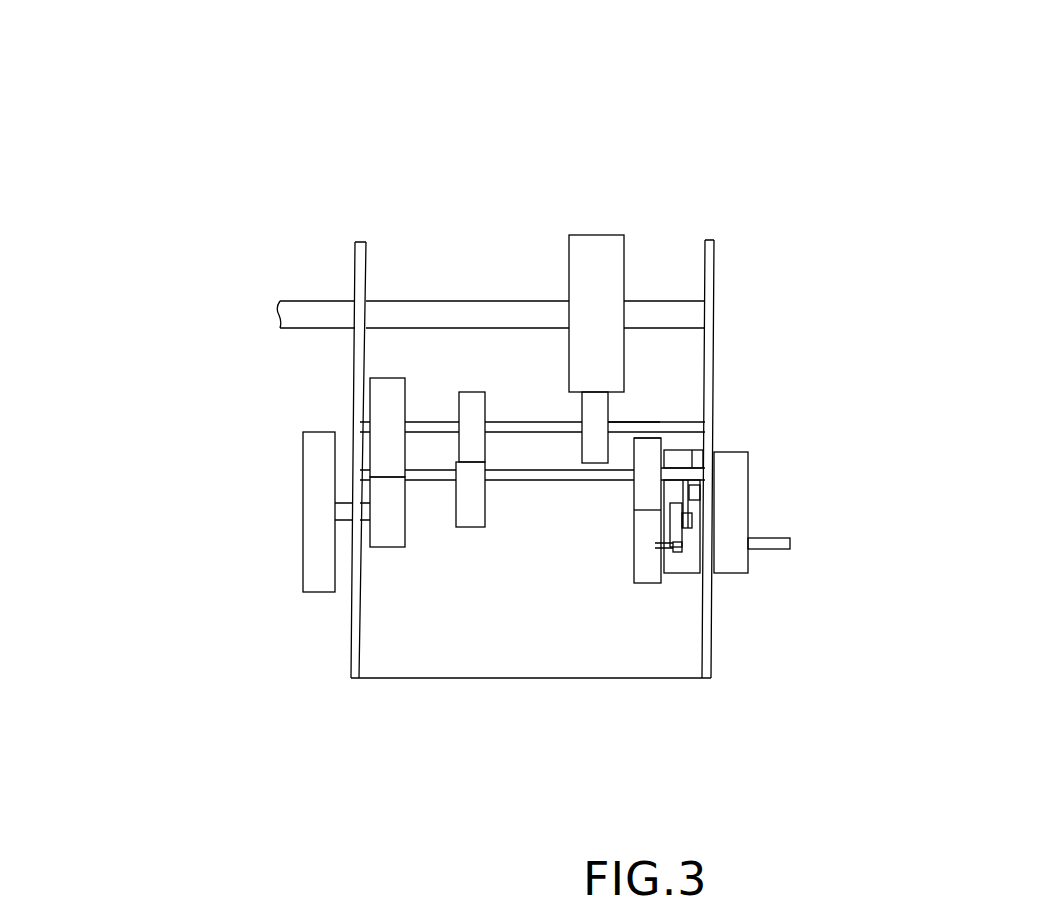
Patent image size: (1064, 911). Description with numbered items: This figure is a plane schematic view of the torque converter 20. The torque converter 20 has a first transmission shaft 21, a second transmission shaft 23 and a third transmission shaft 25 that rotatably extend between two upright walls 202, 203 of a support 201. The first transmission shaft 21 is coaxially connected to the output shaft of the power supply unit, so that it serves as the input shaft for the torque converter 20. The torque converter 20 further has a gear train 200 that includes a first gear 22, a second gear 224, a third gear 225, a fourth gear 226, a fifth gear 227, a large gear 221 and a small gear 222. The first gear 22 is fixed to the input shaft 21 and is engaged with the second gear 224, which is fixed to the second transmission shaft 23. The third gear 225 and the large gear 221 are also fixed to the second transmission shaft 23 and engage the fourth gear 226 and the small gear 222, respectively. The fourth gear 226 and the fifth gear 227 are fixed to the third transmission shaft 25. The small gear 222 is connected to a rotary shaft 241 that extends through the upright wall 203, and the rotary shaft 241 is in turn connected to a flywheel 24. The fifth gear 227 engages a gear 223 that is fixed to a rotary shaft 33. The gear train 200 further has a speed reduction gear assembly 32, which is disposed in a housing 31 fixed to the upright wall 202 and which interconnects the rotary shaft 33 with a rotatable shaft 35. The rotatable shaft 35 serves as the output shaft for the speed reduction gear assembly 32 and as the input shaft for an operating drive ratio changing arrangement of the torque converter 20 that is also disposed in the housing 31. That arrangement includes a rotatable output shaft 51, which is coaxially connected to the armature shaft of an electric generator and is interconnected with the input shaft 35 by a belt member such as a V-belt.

The torque converter 20 is at (317, 300).
The gear train 200 is at (609, 233).
The first transmission shaft 21 is at (402, 312).
The support 201 is at (495, 677).
The upright wall 203 is at (362, 262).
The first gear 22 is at (607, 288).
The upright wall 202 is at (602, 410).
The large gear 221 is at (387, 393).
The small gear 222 is at (383, 497).
The gear 223 is at (645, 563).
The second gear 224 is at (637, 376).
The third gear 225 is at (473, 404).
The fourth gear 226 is at (475, 513).
The fifth gear 227 is at (647, 452).
The second transmission shaft 23 is at (638, 425).
The flywheel 24 is at (318, 562).
The rotary shaft 241 is at (345, 512).
The third transmission shaft 25 is at (672, 468).
The housing 31 is at (701, 500).
The speed reduction gear assembly 32 is at (698, 558).
The rotary shaft 33 is at (662, 545).
The rotatable shaft 35 is at (728, 467).
The rotatable output shaft 51 is at (778, 552).